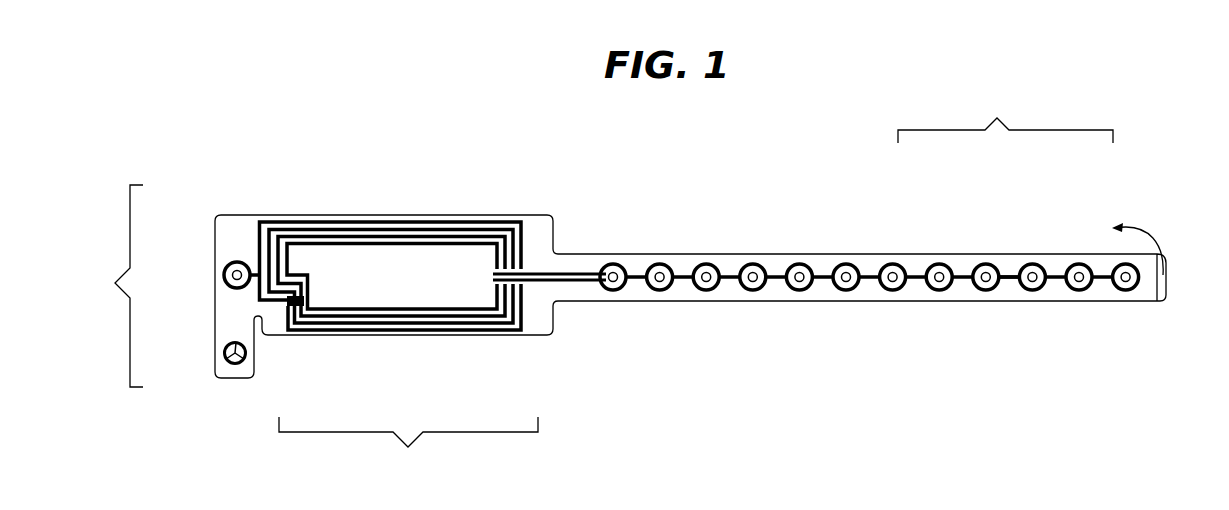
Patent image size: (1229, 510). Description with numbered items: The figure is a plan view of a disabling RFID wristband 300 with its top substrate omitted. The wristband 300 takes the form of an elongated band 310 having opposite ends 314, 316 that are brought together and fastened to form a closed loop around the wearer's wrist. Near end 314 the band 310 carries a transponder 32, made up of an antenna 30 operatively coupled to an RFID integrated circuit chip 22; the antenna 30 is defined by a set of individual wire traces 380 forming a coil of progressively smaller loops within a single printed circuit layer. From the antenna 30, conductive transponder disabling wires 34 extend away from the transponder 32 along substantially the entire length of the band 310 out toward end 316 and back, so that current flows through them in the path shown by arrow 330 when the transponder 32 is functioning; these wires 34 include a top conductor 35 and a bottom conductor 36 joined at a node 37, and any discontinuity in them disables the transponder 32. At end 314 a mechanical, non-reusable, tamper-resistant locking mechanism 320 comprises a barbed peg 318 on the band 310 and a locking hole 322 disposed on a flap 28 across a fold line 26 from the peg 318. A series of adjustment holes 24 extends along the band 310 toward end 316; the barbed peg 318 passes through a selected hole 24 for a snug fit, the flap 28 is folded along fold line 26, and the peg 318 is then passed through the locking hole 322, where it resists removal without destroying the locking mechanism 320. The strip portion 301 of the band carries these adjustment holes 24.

The RFID wristband 300 is at (402, 145).
The end 314 is at (215, 217).
The barbed peg 318 is at (223, 268).
The locking mechanism 320 is at (108, 286).
The fold line 26 is at (210, 325).
The flap 28 is at (233, 377).
The locking hole 322 is at (238, 377).
The RFID integrated circuit chip 22 is at (290, 303).
The antenna 30 is at (398, 328).
The transponder 32 is at (408, 446).
The adjustment holes 24 is at (706, 263).
The transponder disabling wires 34 is at (587, 282).
The strip portion 301 is at (841, 260).
The top conductor 35 is at (1008, 277).
The bottom conductor 36 is at (1008, 277).
The node 37 is at (1147, 283).
The band 310 is at (912, 293).
The end 316 is at (1163, 303).
The arrow 330 is at (1137, 236).
The wire traces 380 is at (1005, 117).